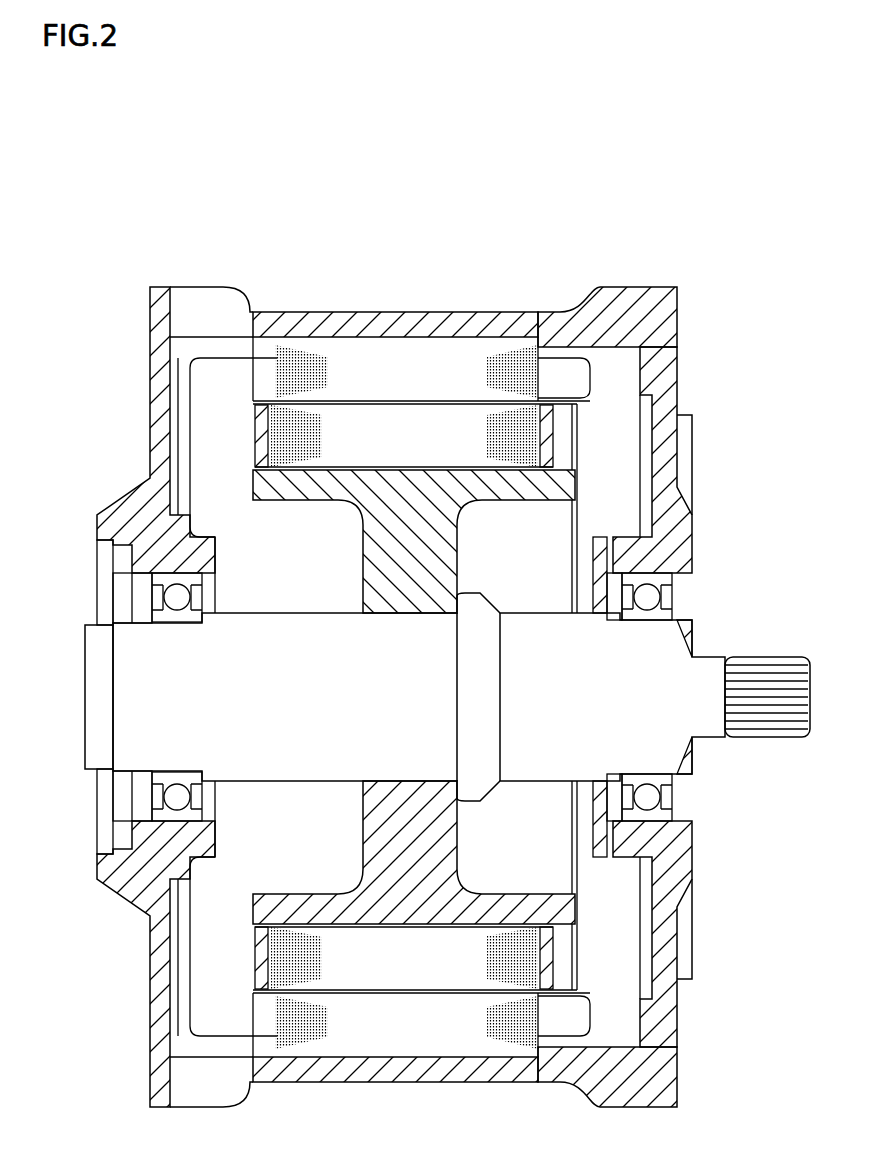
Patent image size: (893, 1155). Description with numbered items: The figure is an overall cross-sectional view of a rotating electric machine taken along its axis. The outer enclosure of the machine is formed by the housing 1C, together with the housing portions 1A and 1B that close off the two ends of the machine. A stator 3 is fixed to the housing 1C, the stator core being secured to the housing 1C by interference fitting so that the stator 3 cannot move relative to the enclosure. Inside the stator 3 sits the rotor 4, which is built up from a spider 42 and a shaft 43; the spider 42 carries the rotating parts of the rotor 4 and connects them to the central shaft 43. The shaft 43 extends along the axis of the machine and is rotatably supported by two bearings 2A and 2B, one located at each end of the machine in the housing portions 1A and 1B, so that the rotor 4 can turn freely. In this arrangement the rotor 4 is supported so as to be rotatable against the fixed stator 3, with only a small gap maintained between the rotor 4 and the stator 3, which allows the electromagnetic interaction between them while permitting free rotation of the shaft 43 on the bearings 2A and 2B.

The first housing (front housing) 1A is at (132, 517).
The second housing (rear bracket) 1B is at (688, 524).
The housing 1C is at (567, 328).
The bearing 2A is at (176, 596).
The bearing 2B is at (663, 602).
The stator 3 is at (355, 362).
The rotor 4 is at (343, 435).
The spider 42 is at (400, 843).
The shaft 43 is at (128, 725).